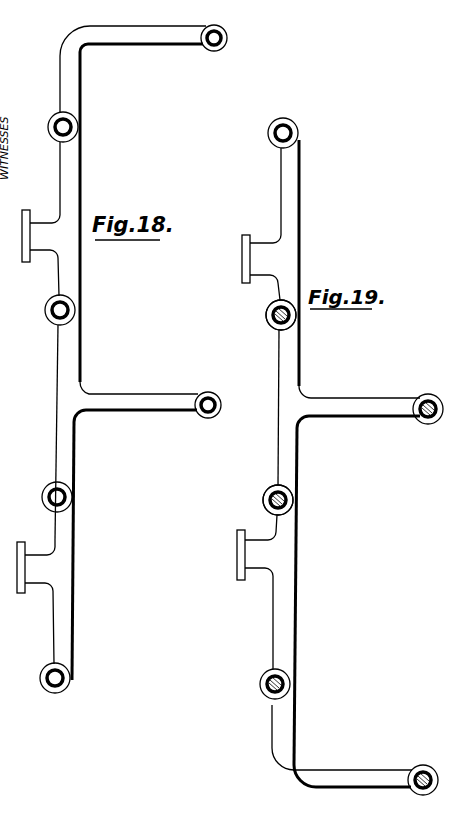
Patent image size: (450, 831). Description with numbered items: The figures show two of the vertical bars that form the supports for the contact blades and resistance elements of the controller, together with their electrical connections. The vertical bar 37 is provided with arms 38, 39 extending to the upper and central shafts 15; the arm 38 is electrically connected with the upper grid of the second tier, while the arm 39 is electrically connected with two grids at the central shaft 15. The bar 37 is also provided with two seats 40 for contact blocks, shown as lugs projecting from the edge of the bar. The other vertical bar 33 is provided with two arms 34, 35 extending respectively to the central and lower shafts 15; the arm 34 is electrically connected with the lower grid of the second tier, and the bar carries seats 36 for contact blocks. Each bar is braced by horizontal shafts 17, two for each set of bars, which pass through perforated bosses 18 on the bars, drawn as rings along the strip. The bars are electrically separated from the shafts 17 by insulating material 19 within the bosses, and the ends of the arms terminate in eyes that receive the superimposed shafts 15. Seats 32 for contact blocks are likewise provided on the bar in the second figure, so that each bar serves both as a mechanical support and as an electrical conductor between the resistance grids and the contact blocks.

In FIG. 18, the shaft 15 is at (222, 46).
In FIG. 19, the shaft 15 is at (425, 771).
In FIG. 18, the horizontal shaft 17 is at (78, 127).
In FIG. 19, the horizontal shaft 17 is at (261, 683).
In FIG. 19, the perforated boss 18 is at (298, 326).
In FIG. 19, the insulating material 19 is at (292, 500).
In FIG. 19, the seat 32 is at (362, 344).
In FIG. 19, the vertical bar 33 is at (296, 592).
In FIG. 19, the arm 34 is at (370, 413).
In FIG. 19, the arm 35 is at (340, 766).
In FIG. 19, the seat 36 is at (241, 258).
In FIG. 18, the vertical bar 37 is at (72, 453).
In FIG. 18, the arm 38 is at (154, 46).
In FIG. 18, the arm 39 is at (144, 395).
In FIG. 18, the seat 40 is at (20, 237).